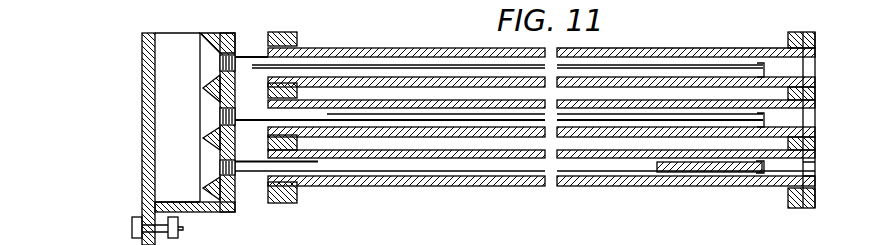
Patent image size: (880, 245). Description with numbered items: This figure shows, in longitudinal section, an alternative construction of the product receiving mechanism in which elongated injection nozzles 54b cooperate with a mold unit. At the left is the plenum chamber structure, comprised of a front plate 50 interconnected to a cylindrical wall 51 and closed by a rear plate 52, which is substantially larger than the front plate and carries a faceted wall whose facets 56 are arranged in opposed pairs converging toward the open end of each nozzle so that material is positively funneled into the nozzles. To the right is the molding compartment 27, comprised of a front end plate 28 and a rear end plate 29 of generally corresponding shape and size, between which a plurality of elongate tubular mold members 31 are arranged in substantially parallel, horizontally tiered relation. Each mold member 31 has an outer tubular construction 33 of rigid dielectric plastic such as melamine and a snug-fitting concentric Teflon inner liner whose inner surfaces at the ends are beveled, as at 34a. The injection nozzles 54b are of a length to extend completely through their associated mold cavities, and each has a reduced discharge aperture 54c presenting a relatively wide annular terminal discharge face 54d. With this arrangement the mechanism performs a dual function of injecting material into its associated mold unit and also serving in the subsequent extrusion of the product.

The front plate 50 is at (142, 118).
The cylindrical wall 51 is at (200, 212).
The rear plate 52 is at (231, 33).
The facets 56 is at (210, 137).
The beveled inner surface 34a is at (268, 46).
The front end plate 28 is at (288, 200).
The outer tubular construction 33 is at (400, 47).
The tubular mold member 31 is at (620, 44).
The molding compartment 27 is at (321, 195).
The injection nozzle 54b is at (710, 177).
The annular terminal discharge face 54d is at (759, 174).
The reduced discharge aperture 54c is at (803, 168).
The rear end plate 29 is at (797, 209).